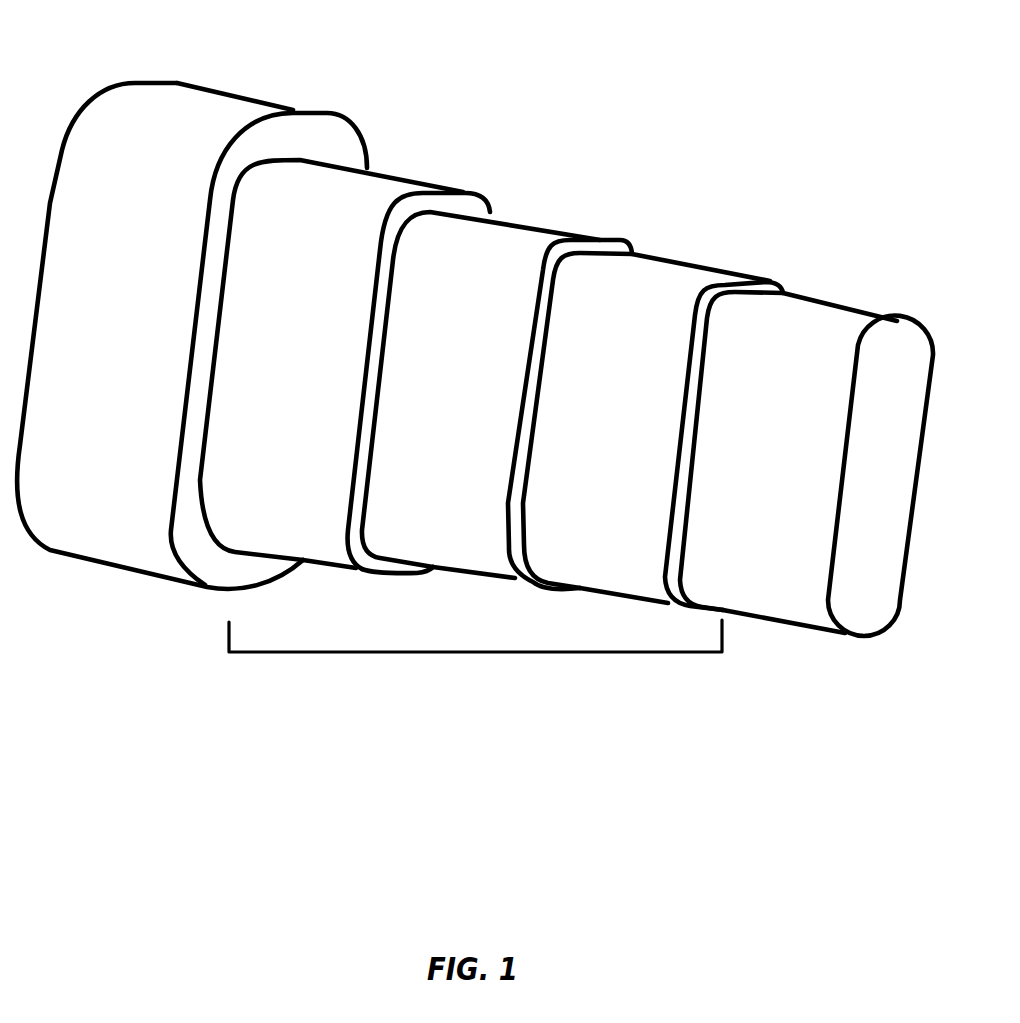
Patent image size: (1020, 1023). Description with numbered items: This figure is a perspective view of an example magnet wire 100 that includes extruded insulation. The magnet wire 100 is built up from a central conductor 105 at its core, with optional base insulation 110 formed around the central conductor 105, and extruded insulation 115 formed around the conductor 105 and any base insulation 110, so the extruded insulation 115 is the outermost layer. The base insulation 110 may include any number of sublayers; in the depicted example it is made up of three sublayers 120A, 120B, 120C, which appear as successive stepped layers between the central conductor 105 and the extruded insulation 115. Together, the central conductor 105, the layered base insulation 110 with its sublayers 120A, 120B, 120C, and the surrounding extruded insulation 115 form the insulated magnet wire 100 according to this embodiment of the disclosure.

The magnet wire 100 is at (148, 668).
The central conductor 105 is at (828, 337).
The base insulation 110 is at (475, 664).
The extruded insulation 115 is at (180, 142).
The sublayer 120A is at (668, 300).
The sublayer 120B is at (535, 270).
The sublayer 120C is at (373, 210).